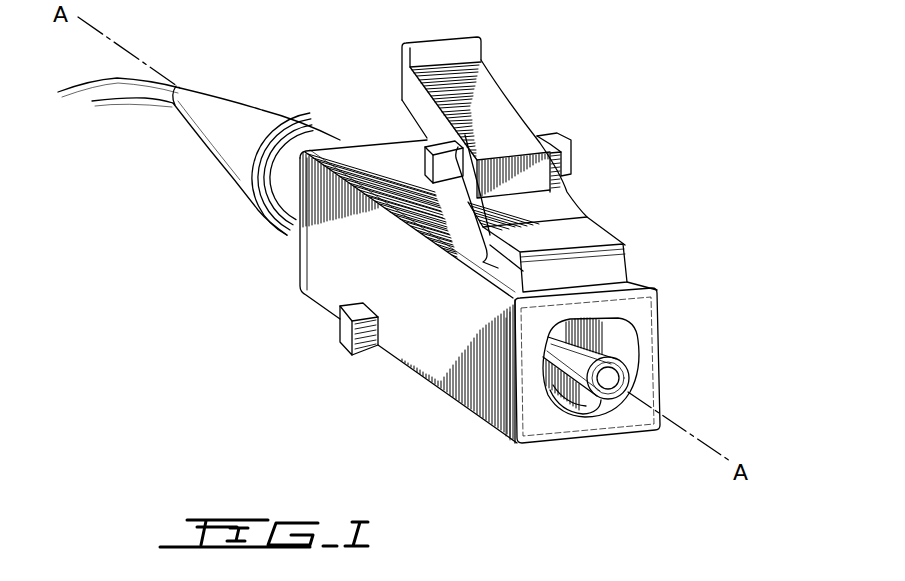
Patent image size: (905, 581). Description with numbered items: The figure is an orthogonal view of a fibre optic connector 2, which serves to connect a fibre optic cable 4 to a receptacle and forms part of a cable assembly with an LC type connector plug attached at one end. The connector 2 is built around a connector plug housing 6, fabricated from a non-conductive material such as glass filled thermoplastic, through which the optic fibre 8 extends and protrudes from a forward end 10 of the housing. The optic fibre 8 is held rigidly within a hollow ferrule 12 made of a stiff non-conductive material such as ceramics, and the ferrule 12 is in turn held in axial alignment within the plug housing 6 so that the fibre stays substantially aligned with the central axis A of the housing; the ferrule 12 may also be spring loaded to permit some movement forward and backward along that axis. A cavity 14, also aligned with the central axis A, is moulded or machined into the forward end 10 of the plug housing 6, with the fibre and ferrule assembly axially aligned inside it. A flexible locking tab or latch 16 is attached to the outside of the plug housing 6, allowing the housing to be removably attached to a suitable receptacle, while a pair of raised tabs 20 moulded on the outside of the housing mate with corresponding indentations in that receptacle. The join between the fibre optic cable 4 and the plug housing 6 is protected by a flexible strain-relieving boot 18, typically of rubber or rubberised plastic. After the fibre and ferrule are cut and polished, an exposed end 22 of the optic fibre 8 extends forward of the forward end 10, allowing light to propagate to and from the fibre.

The connector 2 is at (487, 277).
The fibre optic cable 4 is at (206, 101).
The connector plug housing 6 is at (323, 264).
The optic fibre 8 is at (609, 383).
The forward end 10 is at (643, 390).
The ferrule 12 is at (567, 358).
The cavity 14 is at (577, 414).
The latch 16 is at (583, 232).
The strain-relieving boot 18 is at (292, 130).
The raised tab 20 is at (350, 335).
The exposed end 22 is at (613, 377).